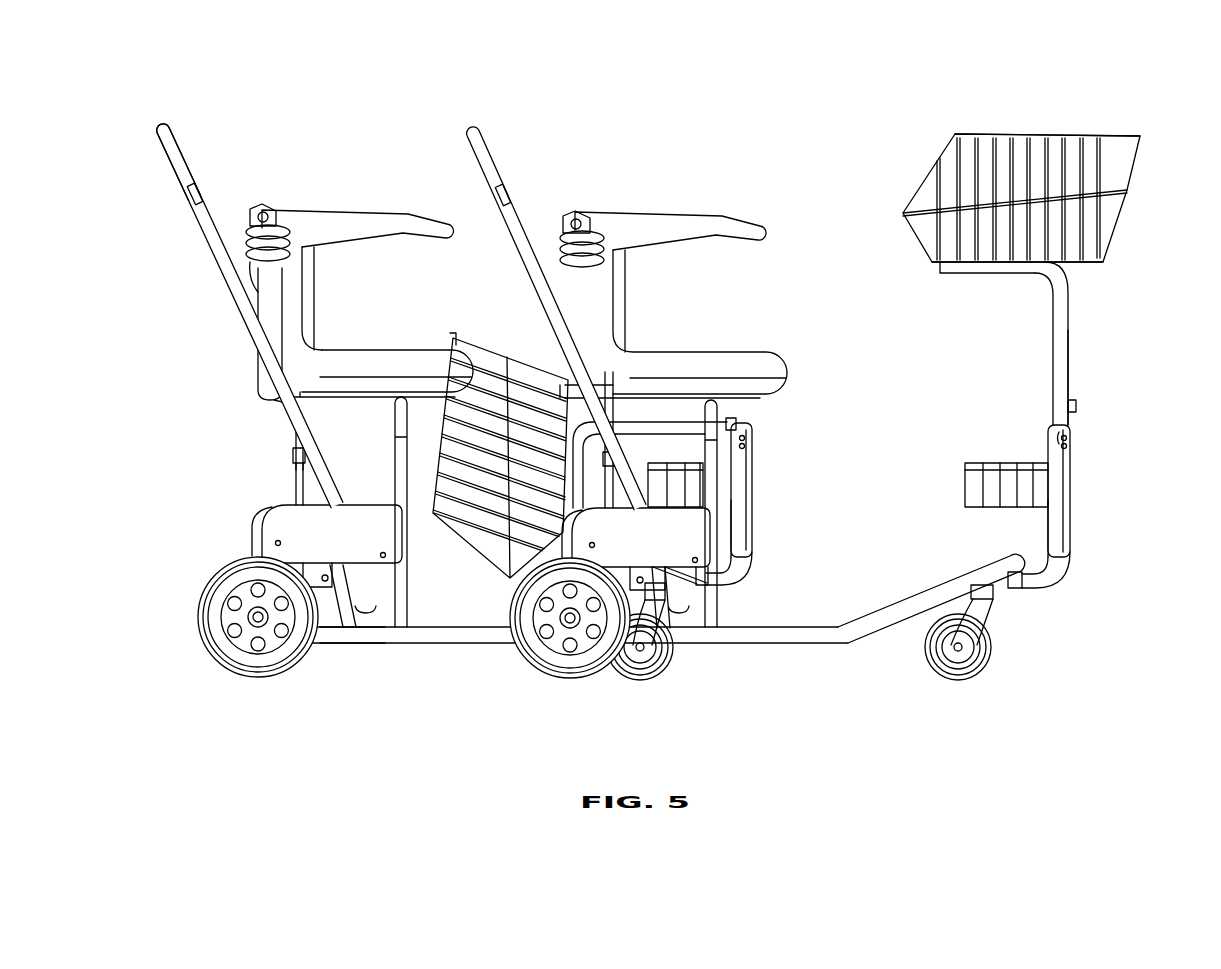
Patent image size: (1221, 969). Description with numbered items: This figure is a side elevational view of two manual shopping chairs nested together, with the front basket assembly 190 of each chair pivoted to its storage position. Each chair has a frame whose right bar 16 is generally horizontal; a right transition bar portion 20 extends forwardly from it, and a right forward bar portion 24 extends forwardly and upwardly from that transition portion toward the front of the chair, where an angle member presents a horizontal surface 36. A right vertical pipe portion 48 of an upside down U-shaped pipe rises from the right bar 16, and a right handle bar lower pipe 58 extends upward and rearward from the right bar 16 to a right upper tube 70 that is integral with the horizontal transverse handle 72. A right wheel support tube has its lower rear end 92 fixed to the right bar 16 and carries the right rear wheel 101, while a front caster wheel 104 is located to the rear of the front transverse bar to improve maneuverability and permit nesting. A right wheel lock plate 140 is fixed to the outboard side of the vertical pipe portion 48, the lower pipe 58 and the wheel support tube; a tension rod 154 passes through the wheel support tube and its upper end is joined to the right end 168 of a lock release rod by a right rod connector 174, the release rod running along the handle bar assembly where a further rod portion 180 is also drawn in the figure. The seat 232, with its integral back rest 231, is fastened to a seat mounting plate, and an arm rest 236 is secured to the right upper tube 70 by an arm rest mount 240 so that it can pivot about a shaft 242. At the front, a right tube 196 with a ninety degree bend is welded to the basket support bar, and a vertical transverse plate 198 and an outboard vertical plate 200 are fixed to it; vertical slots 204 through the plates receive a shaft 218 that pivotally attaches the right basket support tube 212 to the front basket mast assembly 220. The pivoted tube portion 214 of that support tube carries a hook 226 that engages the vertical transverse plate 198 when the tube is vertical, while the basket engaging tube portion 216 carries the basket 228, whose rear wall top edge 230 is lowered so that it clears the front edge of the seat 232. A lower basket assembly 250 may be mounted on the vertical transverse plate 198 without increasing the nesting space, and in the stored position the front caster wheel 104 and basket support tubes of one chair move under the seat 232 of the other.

The right bar 16 is at (333, 645).
The right transition bar portion 20 is at (476, 645).
The right forward bar portion 24 is at (878, 633).
The horizontal surface 36 is at (1012, 590).
The right vertical pipe portion 48 is at (408, 596).
The right handle bar lower pipe 58 is at (368, 606).
The right upper tube 70 is at (207, 192).
The horizontal transverse handle 72 is at (177, 128).
The lower rear end 92 is at (252, 545).
The right rear wheel 101 is at (259, 680).
The front caster wheel 104 is at (642, 680).
The right wheel lock plate 140 is at (267, 530).
The tension rod 154 is at (295, 490).
The right end 168 is at (295, 440).
The right rod connector 174 is at (293, 458).
The connecting tube 180 is at (283, 405).
The front basket assembly 190 is at (482, 325).
The right tube 196 is at (1057, 574).
The vertical transverse plate 198 is at (1072, 505).
The outboard vertical plate 200 is at (1064, 538).
The vertical slots 204 is at (1069, 450).
The right basket support tube 212 is at (1052, 338).
The pivoted tube portion 214 is at (1070, 360).
The basket engaging tube portion 216 is at (970, 276).
The shaft 218 is at (1070, 440).
The front basket mast assembly 220 is at (759, 483).
The hook 226 is at (1076, 405).
The basket 228 is at (1011, 133).
The rear wall top edge 230 is at (902, 220).
The back rest 231 is at (316, 290).
The seat 232 is at (393, 350).
The arm rest 236 is at (389, 210).
The arm rest mount 240 is at (256, 300).
The shaft 242 is at (263, 207).
The lower basket assembly 250 is at (983, 451).